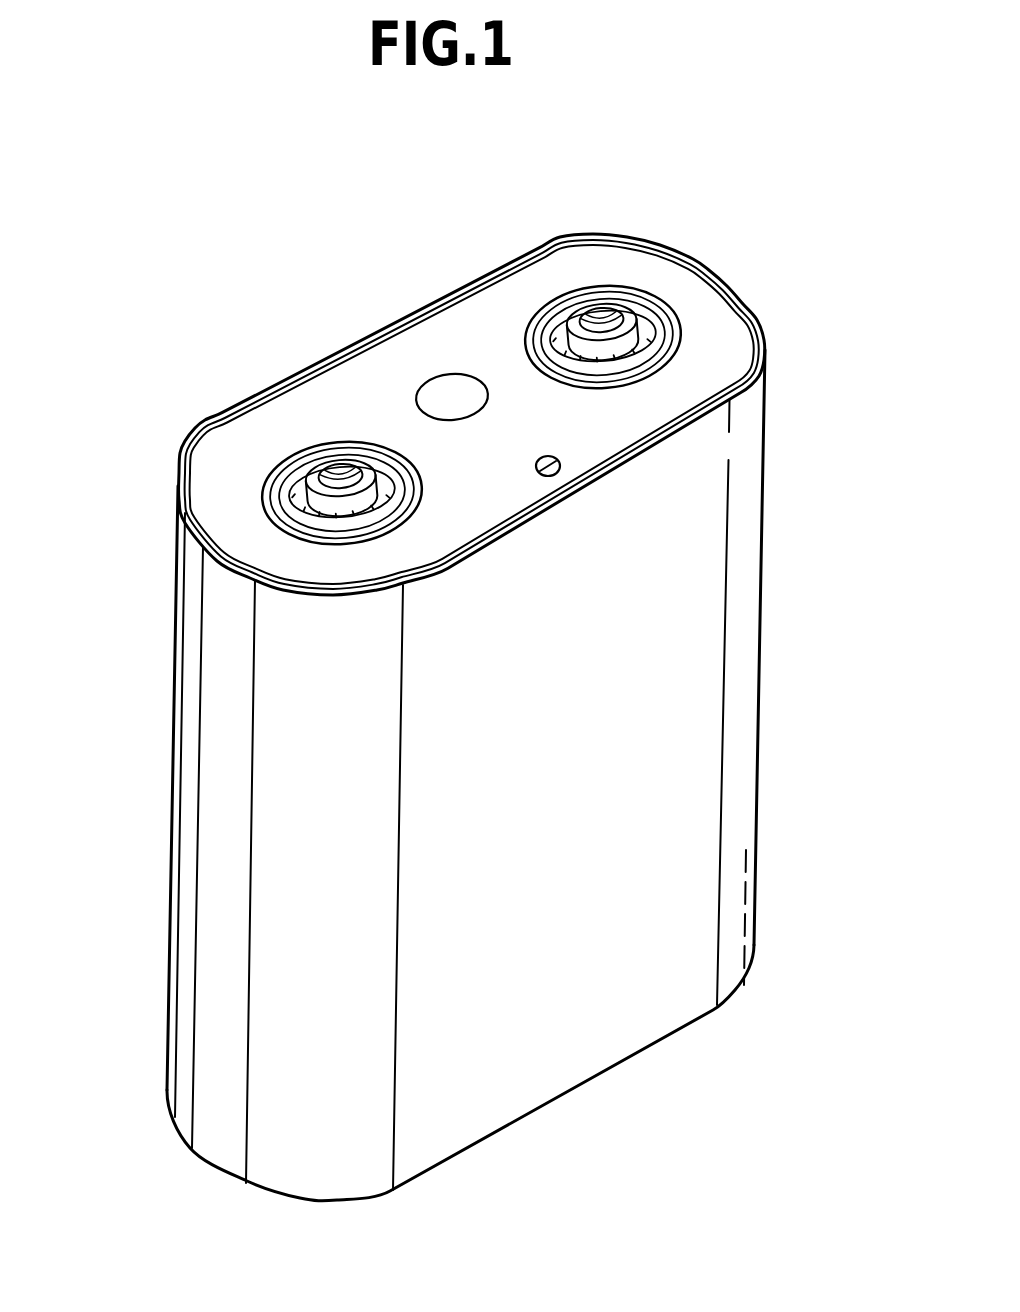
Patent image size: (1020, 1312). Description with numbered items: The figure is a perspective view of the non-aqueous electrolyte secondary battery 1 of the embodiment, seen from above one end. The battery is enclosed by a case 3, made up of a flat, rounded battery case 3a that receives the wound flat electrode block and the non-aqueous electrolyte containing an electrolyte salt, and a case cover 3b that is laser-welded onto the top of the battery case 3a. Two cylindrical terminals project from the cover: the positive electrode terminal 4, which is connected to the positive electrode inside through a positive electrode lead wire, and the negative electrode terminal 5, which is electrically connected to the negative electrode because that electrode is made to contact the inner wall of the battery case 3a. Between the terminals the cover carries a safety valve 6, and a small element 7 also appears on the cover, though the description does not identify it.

The non-aqueous electrolyte secondary battery 1 is at (529, 834).
The battery case 3 is at (166, 456).
The battery case 3a is at (188, 705).
The case cover 3b is at (387, 362).
The positive electrode terminal 4 is at (342, 460).
The negative electrode terminal 5 is at (633, 331).
The safety valve 6 is at (453, 390).
The electrolyte filling hole 7 is at (548, 457).